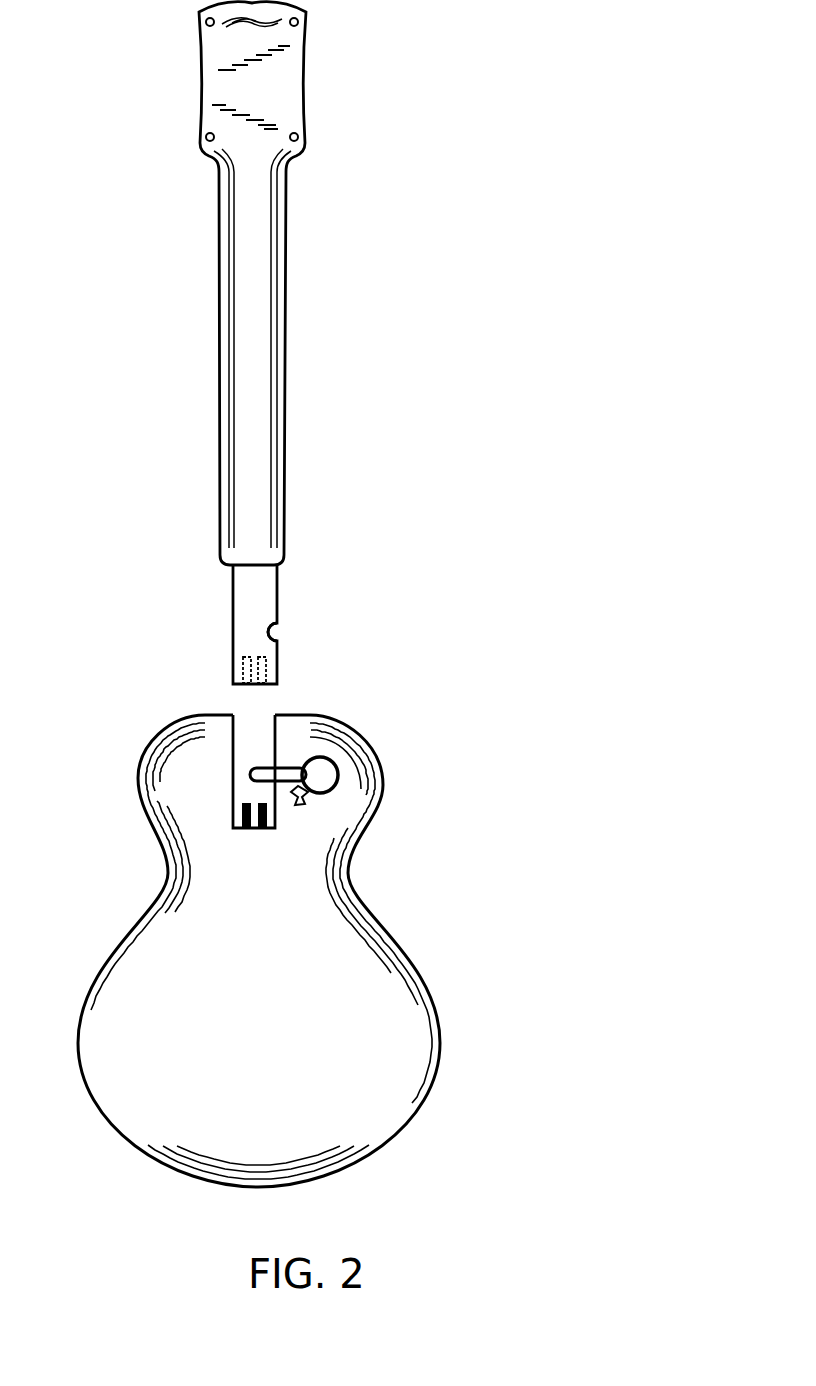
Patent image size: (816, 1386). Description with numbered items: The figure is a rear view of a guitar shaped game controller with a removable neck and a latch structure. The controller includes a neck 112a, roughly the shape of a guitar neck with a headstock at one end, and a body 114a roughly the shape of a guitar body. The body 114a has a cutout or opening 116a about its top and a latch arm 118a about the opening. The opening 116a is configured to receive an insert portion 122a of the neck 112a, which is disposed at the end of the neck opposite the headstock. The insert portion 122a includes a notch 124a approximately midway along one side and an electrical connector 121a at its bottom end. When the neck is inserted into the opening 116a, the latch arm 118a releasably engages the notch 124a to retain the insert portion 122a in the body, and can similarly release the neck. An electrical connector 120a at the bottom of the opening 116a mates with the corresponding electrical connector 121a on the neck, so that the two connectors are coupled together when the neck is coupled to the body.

The neck 112a is at (286, 265).
The body 114a is at (295, 1052).
The opening 116a is at (233, 780).
The latch arm 118a is at (330, 762).
The electrical connector 120a is at (257, 830).
The electrical connector 121a is at (252, 684).
The insert portion 122a is at (233, 618).
The notch 124a is at (274, 634).